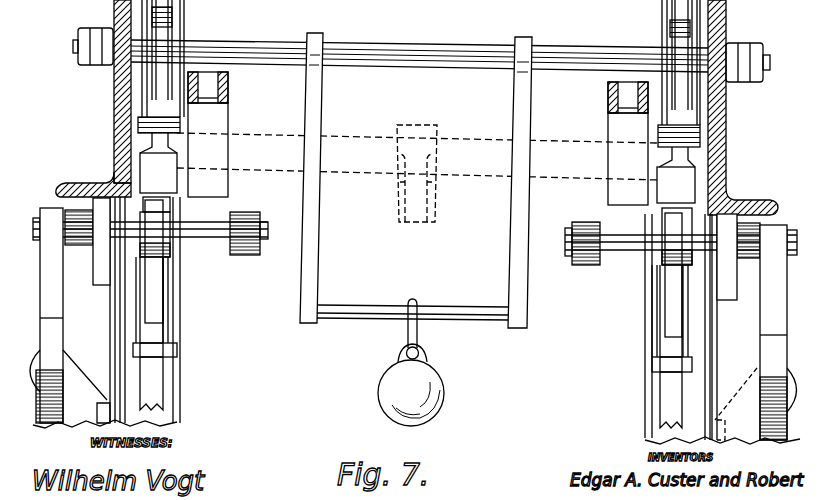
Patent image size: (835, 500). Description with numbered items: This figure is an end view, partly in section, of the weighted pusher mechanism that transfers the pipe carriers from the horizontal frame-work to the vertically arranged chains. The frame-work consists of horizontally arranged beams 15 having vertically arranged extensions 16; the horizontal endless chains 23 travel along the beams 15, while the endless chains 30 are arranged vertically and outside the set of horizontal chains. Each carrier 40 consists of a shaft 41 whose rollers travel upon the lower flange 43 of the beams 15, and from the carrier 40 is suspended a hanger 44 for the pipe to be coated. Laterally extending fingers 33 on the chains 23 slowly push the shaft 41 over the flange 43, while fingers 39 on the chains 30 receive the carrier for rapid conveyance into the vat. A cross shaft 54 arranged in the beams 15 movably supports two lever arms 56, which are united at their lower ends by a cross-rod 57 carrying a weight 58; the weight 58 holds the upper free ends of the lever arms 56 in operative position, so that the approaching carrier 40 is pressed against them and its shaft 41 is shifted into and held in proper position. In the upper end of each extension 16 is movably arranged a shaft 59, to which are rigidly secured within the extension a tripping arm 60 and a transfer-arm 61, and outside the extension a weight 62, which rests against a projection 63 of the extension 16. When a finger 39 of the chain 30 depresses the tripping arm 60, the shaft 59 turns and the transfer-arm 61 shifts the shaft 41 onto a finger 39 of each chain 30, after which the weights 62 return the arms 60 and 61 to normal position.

The horizontally arranged beam 15 is at (113, 88).
The vertically arranged extension 16 is at (167, 393).
The endless chain 23 is at (228, 89).
The endless chain 30 is at (167, 308).
The laterally extending finger 33 is at (218, 151).
The laterally extending finger 39 is at (148, 163).
The carrier 40 is at (358, 128).
The shaft 41 is at (463, 148).
The flange 43 is at (70, 179).
The hanger 44 is at (427, 208).
The cross shaft 54 is at (413, 62).
The lever arm 56 is at (315, 248).
The cross-rod 57 is at (377, 296).
The weight 58 is at (440, 388).
The shaft 59 is at (207, 239).
The tripping arm 60 is at (165, 203).
The transfer-arm 61 is at (238, 254).
The weight 62 is at (53, 329).
The projection 63 is at (70, 438).